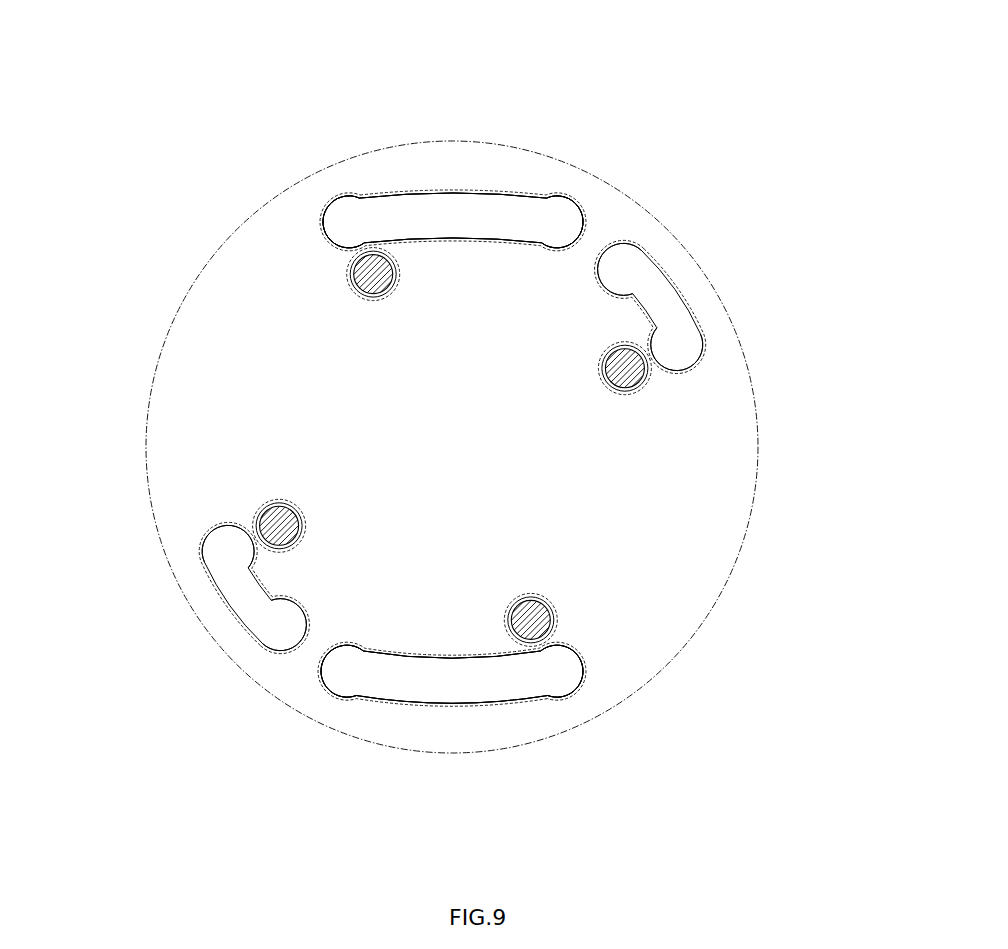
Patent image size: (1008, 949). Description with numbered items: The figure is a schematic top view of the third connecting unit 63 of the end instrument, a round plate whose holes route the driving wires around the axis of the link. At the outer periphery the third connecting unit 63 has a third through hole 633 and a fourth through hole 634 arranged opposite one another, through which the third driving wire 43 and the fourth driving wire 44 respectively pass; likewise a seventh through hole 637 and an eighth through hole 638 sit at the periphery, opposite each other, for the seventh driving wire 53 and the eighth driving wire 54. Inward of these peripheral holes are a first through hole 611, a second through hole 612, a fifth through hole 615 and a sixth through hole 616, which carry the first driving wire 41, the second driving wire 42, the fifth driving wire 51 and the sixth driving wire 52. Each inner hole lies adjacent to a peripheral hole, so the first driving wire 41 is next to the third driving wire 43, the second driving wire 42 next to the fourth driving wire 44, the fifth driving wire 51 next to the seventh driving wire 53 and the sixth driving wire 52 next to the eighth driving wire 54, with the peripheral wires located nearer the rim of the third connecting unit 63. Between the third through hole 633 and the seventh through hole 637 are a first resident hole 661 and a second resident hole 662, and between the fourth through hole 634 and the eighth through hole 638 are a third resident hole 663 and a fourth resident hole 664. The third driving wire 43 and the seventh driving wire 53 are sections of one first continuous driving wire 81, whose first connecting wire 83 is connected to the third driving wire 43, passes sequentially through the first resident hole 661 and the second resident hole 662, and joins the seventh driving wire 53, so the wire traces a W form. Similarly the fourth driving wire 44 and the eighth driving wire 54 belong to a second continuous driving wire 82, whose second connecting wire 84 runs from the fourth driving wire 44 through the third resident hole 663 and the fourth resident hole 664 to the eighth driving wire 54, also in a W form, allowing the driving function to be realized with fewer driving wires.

The third connecting unit 63 is at (484, 24).
The first driving wire 41 is at (622, 364).
The second driving wire 42 is at (283, 530).
The third driving wire 43 is at (682, 327).
The fourth driving wire 44 is at (227, 560).
The fifth driving wire 51 is at (373, 273).
The sixth driving wire 52 is at (541, 623).
The seventh driving wire 53 is at (355, 228).
The eighth driving wire 54 is at (550, 677).
The first continuous driving wire 81 is at (512, 201).
The second continuous driving wire 82 is at (447, 698).
The first connecting wire 83 is at (437, 223).
The second connecting wire 84 is at (407, 693).
The first through hole 611 is at (647, 384).
The second through hole 612 is at (257, 530).
The fifth through hole 615 is at (353, 283).
The sixth through hole 616 is at (533, 600).
The third through hole 633 is at (703, 342).
The fourth through hole 634 is at (217, 534).
The seventh through hole 637 is at (337, 200).
The eighth through hole 638 is at (583, 672).
The first resident hole 661 is at (640, 247).
The second resident hole 662 is at (572, 203).
The third resident hole 663 is at (283, 647).
The fourth resident hole 664 is at (330, 693).